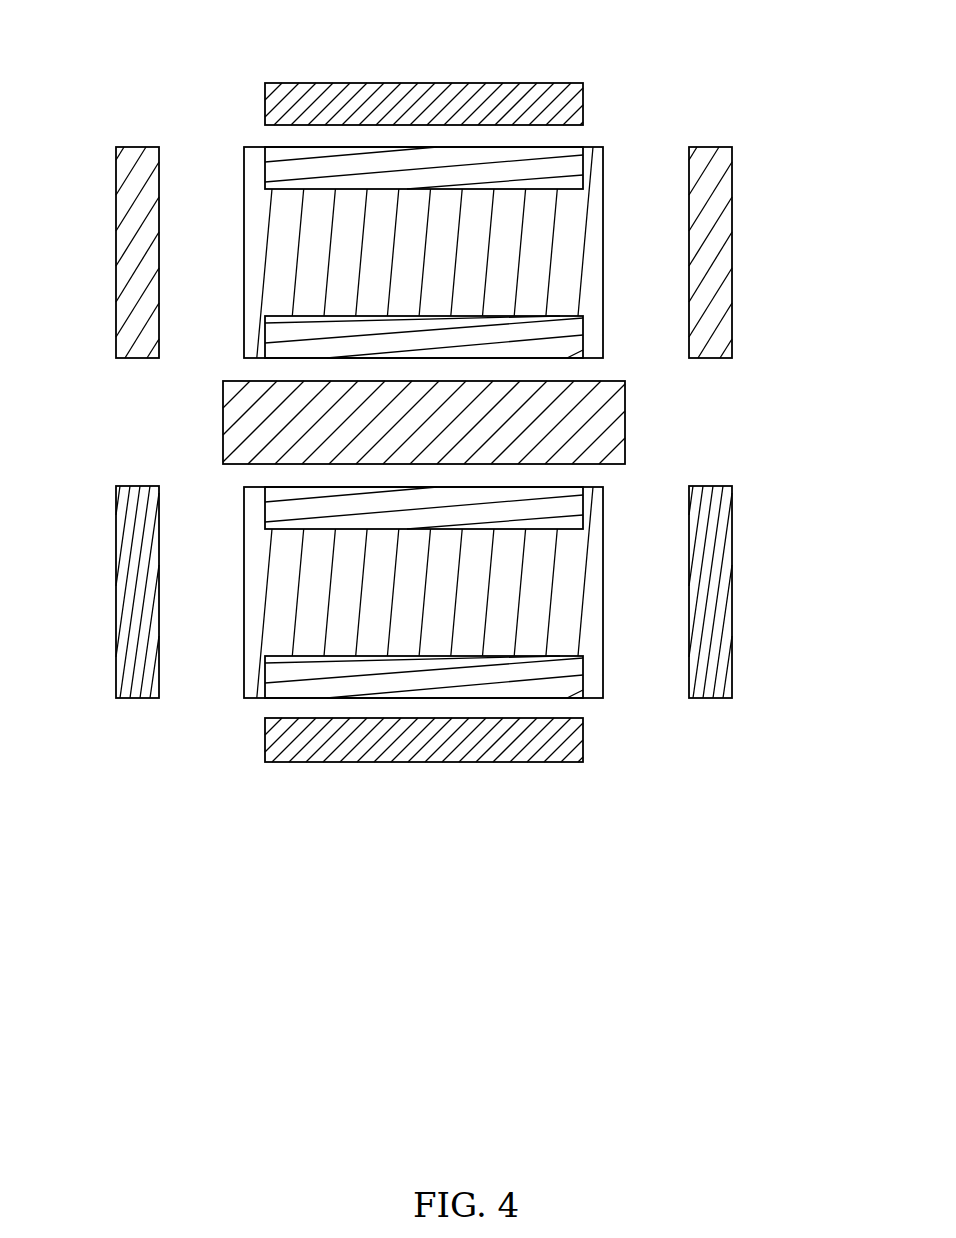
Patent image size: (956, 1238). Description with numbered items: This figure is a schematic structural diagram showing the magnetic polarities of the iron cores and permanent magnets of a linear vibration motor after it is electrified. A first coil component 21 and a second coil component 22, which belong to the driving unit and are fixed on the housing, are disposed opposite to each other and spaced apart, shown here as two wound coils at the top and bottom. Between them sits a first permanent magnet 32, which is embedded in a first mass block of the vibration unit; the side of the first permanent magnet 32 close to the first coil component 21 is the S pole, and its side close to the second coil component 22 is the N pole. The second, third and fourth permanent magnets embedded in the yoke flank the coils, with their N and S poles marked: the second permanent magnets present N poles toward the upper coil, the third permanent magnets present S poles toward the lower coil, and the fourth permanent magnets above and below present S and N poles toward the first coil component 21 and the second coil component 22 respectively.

The first coil component 21 is at (578, 196).
The second coil component 22 is at (580, 685).
The first permanent magnet 32 is at (610, 437).